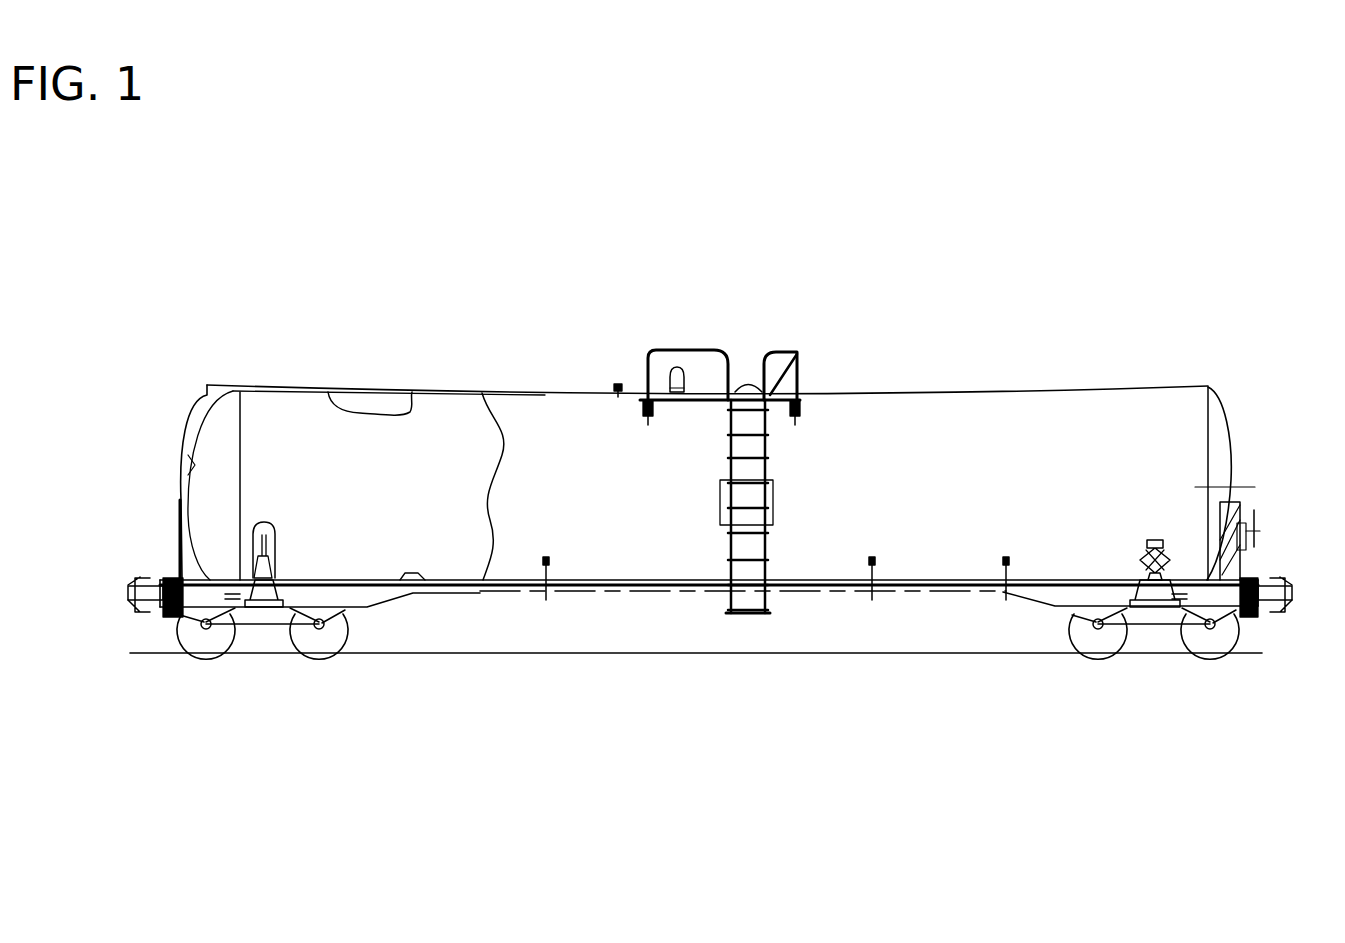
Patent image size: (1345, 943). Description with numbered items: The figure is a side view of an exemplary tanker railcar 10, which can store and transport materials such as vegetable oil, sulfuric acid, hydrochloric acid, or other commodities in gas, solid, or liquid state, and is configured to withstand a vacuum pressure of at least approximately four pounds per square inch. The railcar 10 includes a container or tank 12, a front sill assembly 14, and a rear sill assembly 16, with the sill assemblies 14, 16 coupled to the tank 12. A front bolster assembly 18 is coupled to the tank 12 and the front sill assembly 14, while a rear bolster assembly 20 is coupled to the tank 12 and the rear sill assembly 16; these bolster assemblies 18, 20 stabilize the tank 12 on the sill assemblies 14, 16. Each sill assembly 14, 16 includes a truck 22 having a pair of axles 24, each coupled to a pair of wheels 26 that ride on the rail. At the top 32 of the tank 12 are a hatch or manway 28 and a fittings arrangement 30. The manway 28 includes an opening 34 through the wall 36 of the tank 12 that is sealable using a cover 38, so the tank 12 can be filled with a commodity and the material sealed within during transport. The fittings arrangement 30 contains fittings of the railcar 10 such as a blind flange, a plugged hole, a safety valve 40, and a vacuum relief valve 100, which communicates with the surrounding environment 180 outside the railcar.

The tanker railcar 10 is at (1166, 250).
The tank 12 is at (940, 395).
The front sill assembly 14 is at (1160, 628).
The rear sill assembly 16 is at (256, 642).
The front bolster assembly 18 is at (1165, 575).
The rear bolster assembly 20 is at (262, 558).
The truck 22 is at (347, 612).
The axle 24 is at (202, 632).
The wheel 26 is at (213, 643).
The manway 28 is at (762, 353).
The fittings arrangement 30 is at (657, 330).
The top 32 is at (887, 390).
The opening 34 is at (745, 382).
The wall 36 is at (1012, 437).
The cover 38 is at (798, 364).
The safety valve 40 is at (614, 385).
The vacuum relief valve 100 is at (672, 372).
The surrounding environment 180 is at (432, 293).